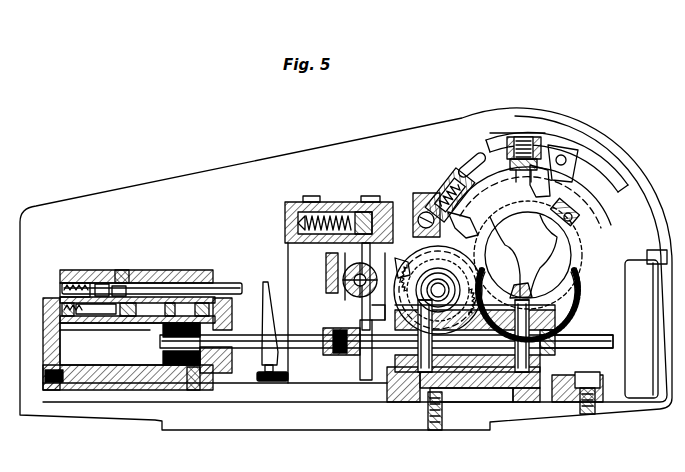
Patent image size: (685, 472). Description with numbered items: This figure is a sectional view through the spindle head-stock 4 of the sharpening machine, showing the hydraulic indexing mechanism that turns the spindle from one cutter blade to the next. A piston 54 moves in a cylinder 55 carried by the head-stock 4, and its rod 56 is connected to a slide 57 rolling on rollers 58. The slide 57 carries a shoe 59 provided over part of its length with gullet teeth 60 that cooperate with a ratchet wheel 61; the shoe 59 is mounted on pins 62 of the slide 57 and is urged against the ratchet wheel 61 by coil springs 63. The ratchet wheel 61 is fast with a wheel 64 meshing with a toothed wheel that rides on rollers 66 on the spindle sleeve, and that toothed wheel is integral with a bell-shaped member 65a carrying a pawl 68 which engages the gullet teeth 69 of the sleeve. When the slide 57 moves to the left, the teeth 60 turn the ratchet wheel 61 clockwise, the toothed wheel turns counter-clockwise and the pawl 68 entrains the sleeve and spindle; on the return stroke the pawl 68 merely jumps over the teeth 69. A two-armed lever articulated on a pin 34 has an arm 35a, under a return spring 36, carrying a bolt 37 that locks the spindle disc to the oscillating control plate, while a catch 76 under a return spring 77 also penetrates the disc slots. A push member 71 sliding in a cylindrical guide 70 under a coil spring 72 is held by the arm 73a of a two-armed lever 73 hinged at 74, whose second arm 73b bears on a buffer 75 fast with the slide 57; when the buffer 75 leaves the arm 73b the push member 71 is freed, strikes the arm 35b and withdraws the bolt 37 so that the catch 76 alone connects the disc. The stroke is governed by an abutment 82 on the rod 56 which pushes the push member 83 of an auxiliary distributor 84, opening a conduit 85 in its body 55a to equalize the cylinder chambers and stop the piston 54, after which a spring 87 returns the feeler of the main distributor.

The spindle head-stock 4 is at (290, 156).
The pin 34 is at (561, 154).
The arm of two-armed lever 35a is at (548, 182).
The arm of two-armed lever 35b is at (598, 165).
The return spring 36 is at (522, 136).
The bolt 37 is at (512, 164).
The piston 54 is at (165, 356).
The cylinder 55 is at (122, 386).
The body of auxiliary distributor 55a is at (82, 272).
The piston rod 56 is at (250, 352).
The slide 57 is at (600, 336).
The rollers 58 is at (406, 372).
The shoe 59 is at (560, 322).
The gullet teeth 60 is at (552, 310).
The ratchet wheel 61 is at (465, 272).
The pins 62 is at (552, 344).
The coil springs 63 is at (418, 302).
The wheel 64 is at (396, 264).
The bell-shaped member 65a is at (586, 243).
The rollers 66 is at (518, 290).
The pawl 68 is at (573, 211).
The gullet teeth of sleeve 69 is at (523, 256).
The cylindrical guide 70 is at (333, 211).
The push member 71 is at (375, 206).
The coil spring 72 is at (302, 204).
The two-armed lever 73 is at (345, 291).
The arm of two-armed lever 73a is at (358, 248).
The arm of two-armed lever 73b is at (372, 308).
The hinge 74 is at (330, 270).
The buffer 75 is at (362, 375).
The catch 76 is at (466, 228).
The return spring 77 is at (432, 182).
The abutment 82 is at (262, 318).
The push member 83 is at (200, 282).
The auxiliary distributor 84 is at (118, 264).
The conduit 85 is at (165, 283).
The spring 87 is at (289, 377).